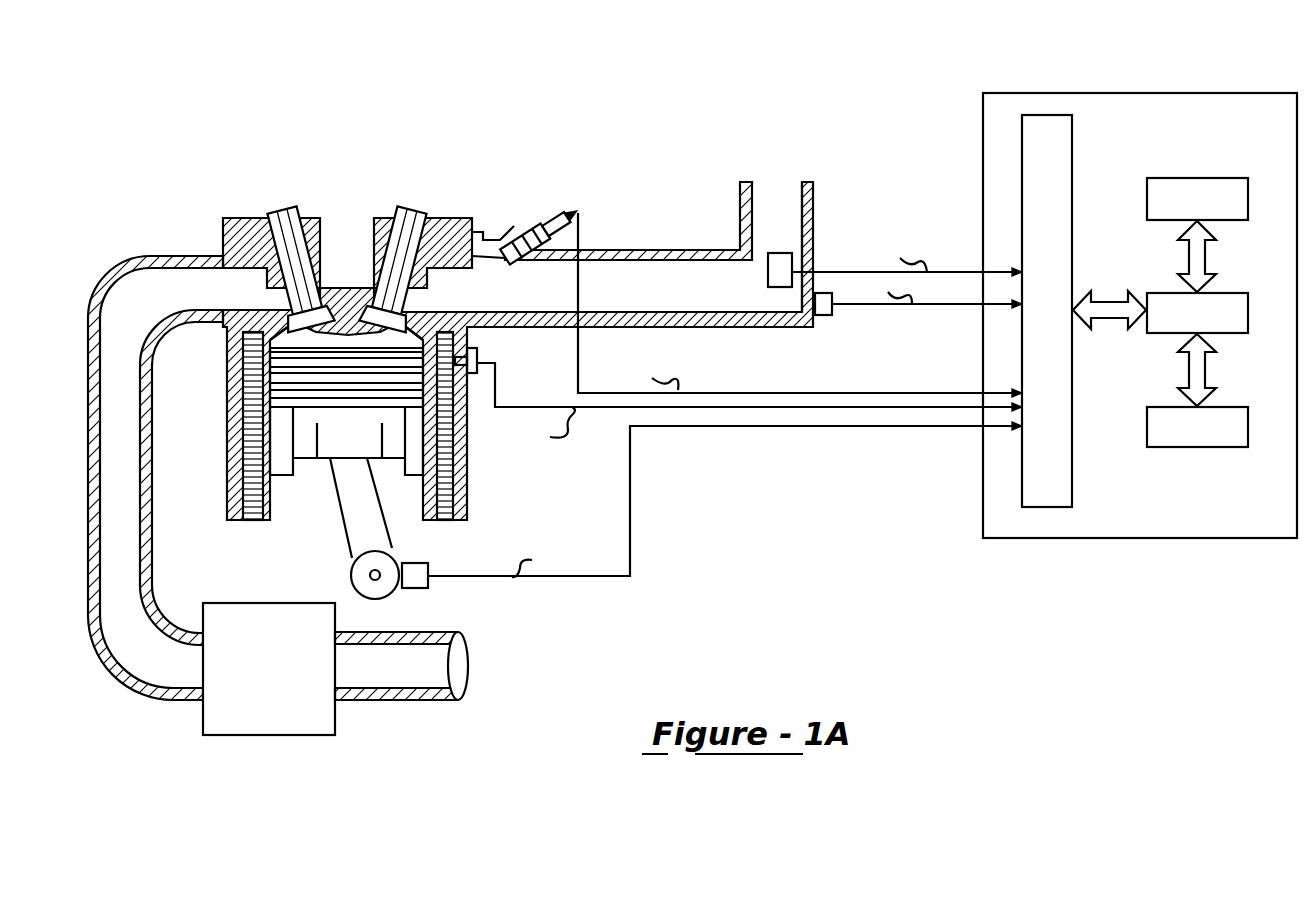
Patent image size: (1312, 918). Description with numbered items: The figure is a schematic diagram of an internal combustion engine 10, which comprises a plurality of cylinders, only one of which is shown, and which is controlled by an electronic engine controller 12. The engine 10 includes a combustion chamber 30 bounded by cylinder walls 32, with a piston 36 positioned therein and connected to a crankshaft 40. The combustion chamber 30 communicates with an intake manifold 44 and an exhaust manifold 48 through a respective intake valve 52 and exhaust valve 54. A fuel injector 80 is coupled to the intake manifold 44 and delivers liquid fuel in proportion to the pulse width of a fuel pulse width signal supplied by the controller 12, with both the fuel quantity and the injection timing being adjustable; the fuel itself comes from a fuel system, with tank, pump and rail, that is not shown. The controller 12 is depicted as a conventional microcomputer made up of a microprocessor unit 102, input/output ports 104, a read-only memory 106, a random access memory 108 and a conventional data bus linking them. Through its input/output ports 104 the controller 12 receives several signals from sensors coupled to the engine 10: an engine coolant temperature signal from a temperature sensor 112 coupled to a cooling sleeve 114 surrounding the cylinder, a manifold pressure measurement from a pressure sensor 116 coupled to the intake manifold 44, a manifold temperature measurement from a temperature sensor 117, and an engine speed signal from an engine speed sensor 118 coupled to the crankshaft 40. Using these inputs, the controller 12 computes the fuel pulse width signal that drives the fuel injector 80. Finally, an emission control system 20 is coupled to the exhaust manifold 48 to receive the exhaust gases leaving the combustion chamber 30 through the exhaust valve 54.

The internal combustion engine 10 is at (548, 438).
The electronic engine controller 12 is at (1102, 315).
The emission control system 20 is at (313, 733).
The combustion chamber 30 is at (327, 337).
The cylinder walls 32 is at (270, 518).
The piston 36 is at (327, 452).
The crankshaft 40 is at (378, 596).
The intake manifold 44 is at (650, 297).
The exhaust manifold 48 is at (140, 312).
The intake valve 52 is at (425, 299).
The exhaust valve 54 is at (297, 310).
The fuel injector 80 is at (528, 236).
The microprocessor unit 102 is at (1228, 293).
The input/output ports 104 is at (1022, 158).
The read-only memory 106 is at (1197, 178).
The random access memory 108 is at (1197, 447).
The temperature sensor 112 is at (478, 352).
The cooling sleeve 114 is at (460, 525).
The pressure sensor 116 is at (780, 288).
The temperature sensor 117 is at (823, 315).
The engine speed sensor 118 is at (428, 566).